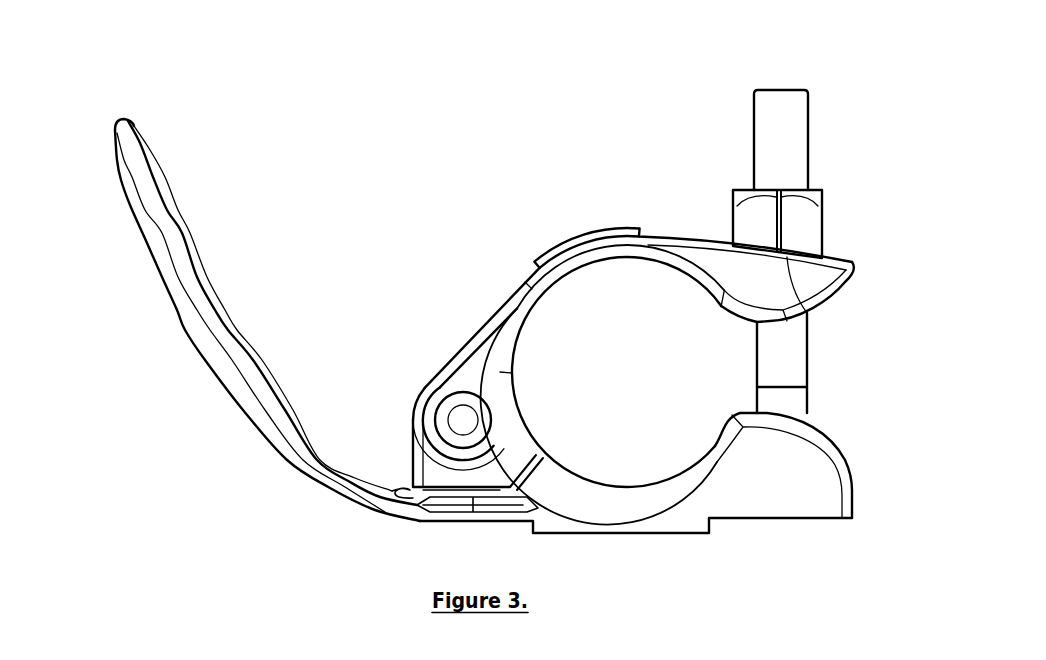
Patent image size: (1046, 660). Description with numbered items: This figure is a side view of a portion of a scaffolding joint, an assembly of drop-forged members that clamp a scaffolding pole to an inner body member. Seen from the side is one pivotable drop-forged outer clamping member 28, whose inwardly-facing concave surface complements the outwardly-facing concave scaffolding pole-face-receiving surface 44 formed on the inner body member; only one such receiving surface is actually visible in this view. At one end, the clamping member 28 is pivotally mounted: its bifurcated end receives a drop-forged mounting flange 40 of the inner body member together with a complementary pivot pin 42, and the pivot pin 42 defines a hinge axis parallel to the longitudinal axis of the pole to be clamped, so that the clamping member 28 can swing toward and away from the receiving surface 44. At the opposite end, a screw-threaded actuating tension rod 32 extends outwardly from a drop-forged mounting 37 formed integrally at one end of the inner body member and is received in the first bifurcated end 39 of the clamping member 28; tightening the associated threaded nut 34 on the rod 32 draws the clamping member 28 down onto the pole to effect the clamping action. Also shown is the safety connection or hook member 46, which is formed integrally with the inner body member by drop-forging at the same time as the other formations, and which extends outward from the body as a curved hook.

The outer clamping member 28 is at (565, 262).
The actuating tension rod 32 is at (770, 142).
The threaded nut 34 is at (747, 223).
The drop-forged mounting 37 is at (732, 502).
The first bifurcated end 39 is at (817, 275).
The mounting flange 40 is at (517, 449).
The pivot pin 42 is at (458, 413).
The concave scaffolding pole-face-receiving surface 44 is at (669, 470).
The safety connection or hook member 46 is at (168, 224).